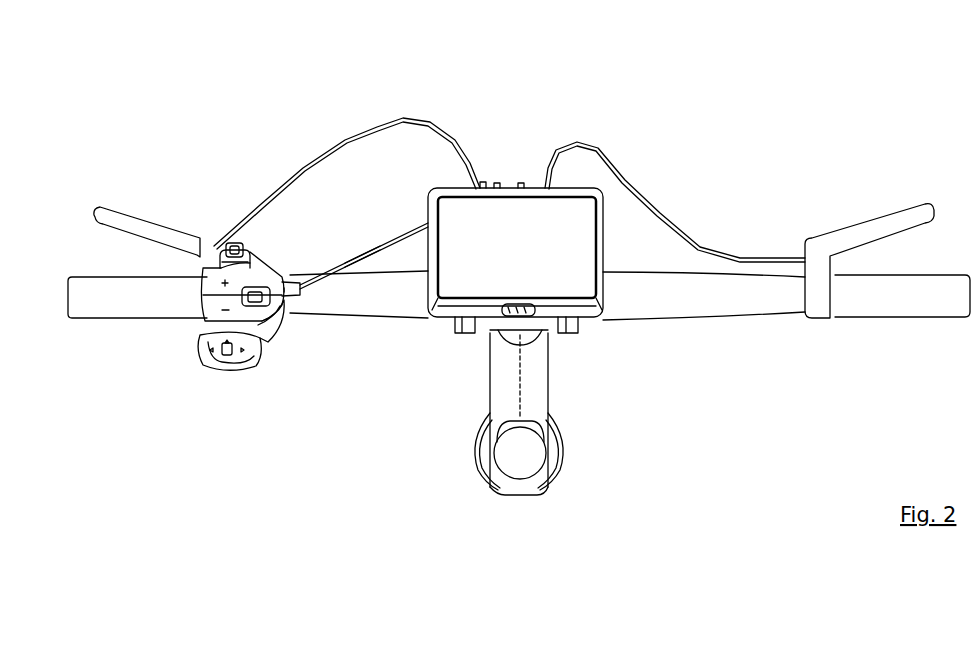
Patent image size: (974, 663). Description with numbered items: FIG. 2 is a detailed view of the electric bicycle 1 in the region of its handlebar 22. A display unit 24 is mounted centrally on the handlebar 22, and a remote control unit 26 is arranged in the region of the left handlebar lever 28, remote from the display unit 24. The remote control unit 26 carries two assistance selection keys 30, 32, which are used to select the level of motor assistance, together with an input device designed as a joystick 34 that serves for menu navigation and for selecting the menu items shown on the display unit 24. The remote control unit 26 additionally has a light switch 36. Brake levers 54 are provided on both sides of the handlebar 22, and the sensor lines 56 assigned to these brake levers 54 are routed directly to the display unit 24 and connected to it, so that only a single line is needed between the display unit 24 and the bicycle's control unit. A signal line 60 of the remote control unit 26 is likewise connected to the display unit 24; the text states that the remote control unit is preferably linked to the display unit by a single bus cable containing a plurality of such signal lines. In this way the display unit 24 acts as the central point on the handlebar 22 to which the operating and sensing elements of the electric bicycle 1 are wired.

The electric bicycle 1 is at (298, 61).
The handlebar 22 is at (820, 157).
The display unit 24 is at (527, 188).
The remote control unit 26 is at (267, 254).
The left handlebar lever 28 is at (120, 312).
The assistance selection key 30 is at (206, 268).
The assistance selection key 32 is at (203, 307).
The joystick 34 is at (232, 242).
The light switch 36 is at (326, 270).
The brake lever 54 is at (148, 235).
The sensor line 56 is at (377, 127).
The signal line 60 is at (362, 264).